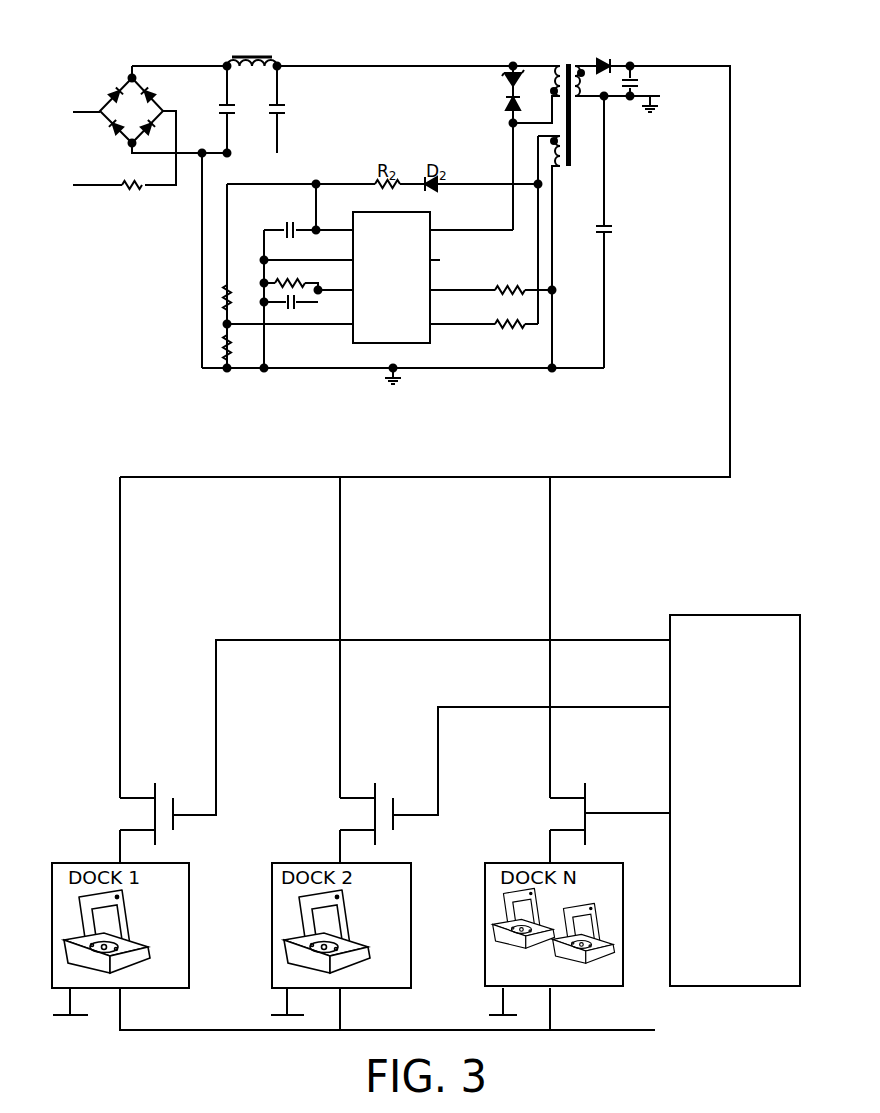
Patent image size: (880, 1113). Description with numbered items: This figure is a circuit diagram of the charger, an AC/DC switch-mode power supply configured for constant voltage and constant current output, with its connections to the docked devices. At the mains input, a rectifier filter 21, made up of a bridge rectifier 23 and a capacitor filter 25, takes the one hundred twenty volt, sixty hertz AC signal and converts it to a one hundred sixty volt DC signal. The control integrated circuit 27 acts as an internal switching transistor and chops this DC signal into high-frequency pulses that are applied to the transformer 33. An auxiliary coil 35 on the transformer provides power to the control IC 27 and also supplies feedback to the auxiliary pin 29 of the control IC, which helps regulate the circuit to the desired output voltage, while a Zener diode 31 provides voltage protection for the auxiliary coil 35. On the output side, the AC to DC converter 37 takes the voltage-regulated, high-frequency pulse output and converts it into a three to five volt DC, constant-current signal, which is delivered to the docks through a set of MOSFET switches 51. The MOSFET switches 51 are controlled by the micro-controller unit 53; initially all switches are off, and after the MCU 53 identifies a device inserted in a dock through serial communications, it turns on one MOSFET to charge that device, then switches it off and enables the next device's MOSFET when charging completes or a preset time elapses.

The rectifier filter 21 is at (180, 61).
The bridge rectifier 23 is at (128, 77).
The capacitor filter 25 is at (240, 58).
The control integrated circuit 27 is at (377, 330).
The auxiliary pin 29 is at (442, 327).
The Zener diode 31 is at (481, 78).
The transformer 33 is at (590, 77).
The auxiliary coil 35 is at (568, 157).
The AC to DC converter 37 is at (667, 82).
The MOSFET switches 51 is at (245, 497).
The micro-controller unit 53 is at (720, 615).